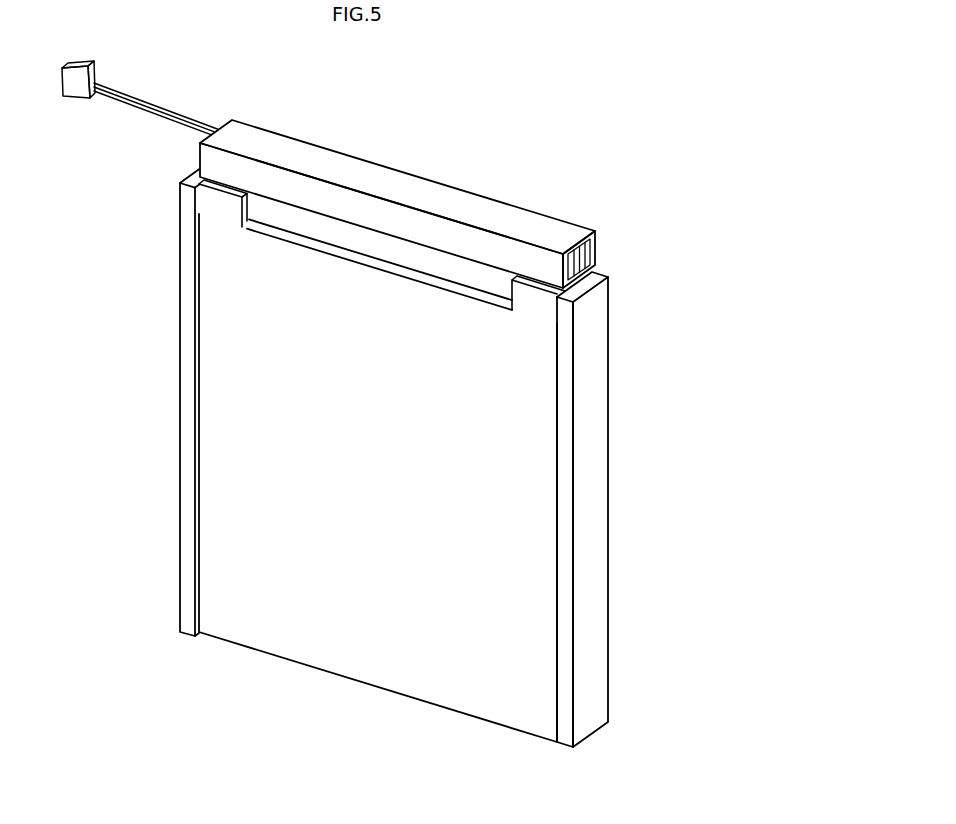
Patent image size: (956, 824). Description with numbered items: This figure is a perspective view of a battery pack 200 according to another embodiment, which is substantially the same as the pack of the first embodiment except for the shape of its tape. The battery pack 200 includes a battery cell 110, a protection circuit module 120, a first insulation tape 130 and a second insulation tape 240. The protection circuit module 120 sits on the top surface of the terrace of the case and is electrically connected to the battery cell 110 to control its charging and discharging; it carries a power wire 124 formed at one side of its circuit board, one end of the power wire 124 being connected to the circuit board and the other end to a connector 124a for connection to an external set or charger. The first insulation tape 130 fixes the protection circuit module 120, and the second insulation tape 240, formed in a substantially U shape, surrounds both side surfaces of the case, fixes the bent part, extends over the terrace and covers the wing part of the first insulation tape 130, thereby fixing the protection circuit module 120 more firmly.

The battery pack 200 is at (668, 82).
The battery cell 110 is at (412, 702).
The second insulation tape 240 is at (170, 398).
The first insulation tape 130 is at (419, 174).
The protection circuit module 120 is at (575, 266).
The power wire 124 is at (128, 106).
The connector 124a is at (72, 95).